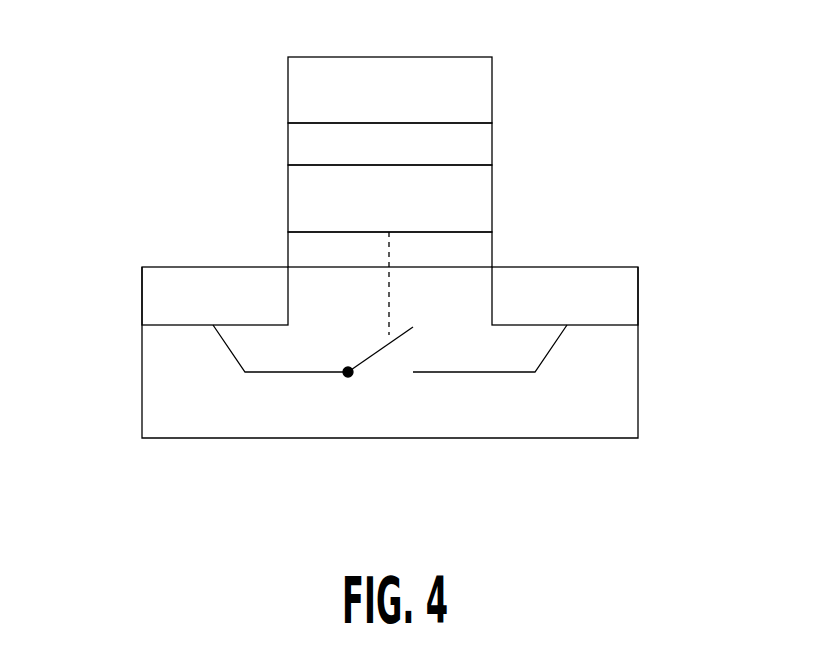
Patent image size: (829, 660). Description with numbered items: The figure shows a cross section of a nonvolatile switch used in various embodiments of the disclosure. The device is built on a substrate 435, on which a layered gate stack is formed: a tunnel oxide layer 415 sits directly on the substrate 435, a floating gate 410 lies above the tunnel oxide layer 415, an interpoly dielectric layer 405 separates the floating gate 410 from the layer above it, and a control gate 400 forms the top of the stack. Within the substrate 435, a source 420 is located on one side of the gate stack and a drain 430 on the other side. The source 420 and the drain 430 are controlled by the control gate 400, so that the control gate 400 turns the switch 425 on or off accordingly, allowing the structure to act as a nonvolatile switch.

The control gate 400 is at (298, 82).
The interpoly dielectric layer 405 is at (298, 144).
The floating gate 410 is at (300, 193).
The tunnel oxide layer 415 is at (298, 250).
The source 420 is at (148, 295).
The switch 425 is at (348, 378).
The drain 430 is at (628, 300).
The substrate 435 is at (148, 395).